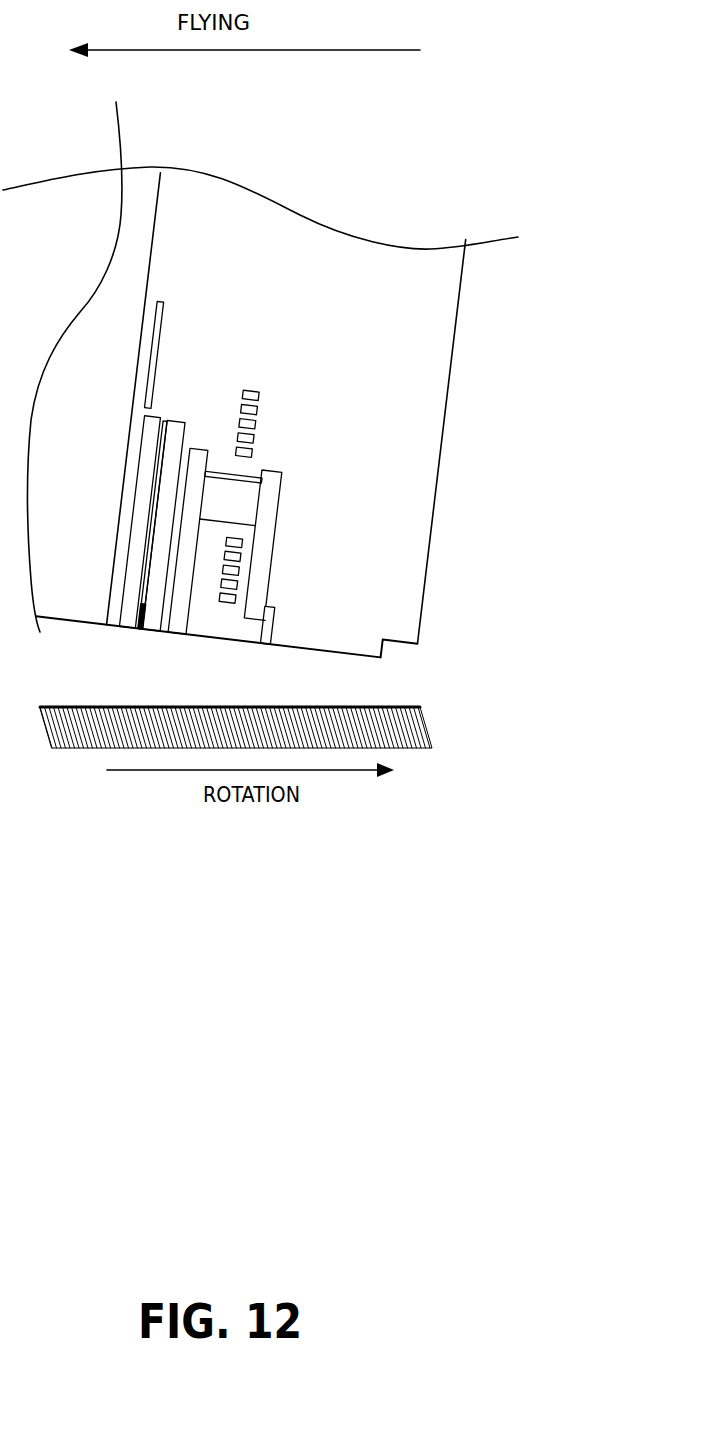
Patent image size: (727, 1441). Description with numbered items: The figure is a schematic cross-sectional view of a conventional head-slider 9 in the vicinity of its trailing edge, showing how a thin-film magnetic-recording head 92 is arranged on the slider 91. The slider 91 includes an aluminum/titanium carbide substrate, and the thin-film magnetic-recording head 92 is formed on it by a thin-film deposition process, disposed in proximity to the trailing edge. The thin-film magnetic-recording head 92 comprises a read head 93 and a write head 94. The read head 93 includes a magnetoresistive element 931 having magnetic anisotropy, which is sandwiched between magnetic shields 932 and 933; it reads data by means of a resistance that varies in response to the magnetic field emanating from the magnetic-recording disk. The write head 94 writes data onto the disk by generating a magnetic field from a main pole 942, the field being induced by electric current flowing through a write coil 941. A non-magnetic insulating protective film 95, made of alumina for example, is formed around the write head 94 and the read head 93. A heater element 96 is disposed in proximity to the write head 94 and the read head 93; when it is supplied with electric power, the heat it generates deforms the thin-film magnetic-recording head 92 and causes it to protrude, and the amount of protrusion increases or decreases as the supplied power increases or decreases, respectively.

The head-slider 9 is at (450, 156).
The slider 91 is at (73, 518).
The thin-film magnetic-recording head 92 is at (478, 394).
The read head 93 is at (155, 502).
The magnetoresistive element 931 is at (141, 628).
The magnetic shield 932 is at (138, 467).
The magnetic shield 933 is at (181, 390).
The write head 94 is at (280, 515).
The write coil 941 is at (258, 393).
The main pole 942 is at (276, 623).
The non-magnetic insulating protective film 95 is at (423, 330).
The heater element 96 is at (165, 303).